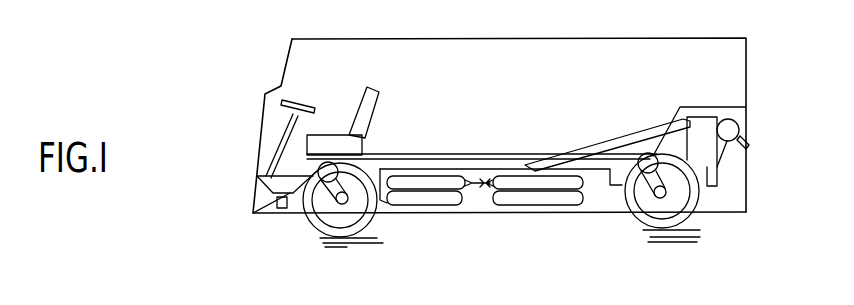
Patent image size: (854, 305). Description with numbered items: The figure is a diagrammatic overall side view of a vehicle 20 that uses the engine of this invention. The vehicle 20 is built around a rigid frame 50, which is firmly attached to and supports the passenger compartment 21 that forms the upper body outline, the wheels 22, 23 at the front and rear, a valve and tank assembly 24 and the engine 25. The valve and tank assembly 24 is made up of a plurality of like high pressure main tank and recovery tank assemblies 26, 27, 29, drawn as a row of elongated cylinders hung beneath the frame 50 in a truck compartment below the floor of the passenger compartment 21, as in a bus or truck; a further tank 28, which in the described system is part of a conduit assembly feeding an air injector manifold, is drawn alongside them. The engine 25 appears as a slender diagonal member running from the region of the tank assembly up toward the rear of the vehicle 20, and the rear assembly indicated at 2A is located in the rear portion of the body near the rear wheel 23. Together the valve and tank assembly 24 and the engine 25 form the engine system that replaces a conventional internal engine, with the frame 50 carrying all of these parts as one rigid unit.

The vehicle 20 is at (284, 66).
The passenger compartment 21 is at (494, 54).
The engine assembly 2A is at (711, 104).
The wheel 22 is at (318, 233).
The wheel 23 is at (648, 220).
The valve and tank assembly 24 is at (537, 114).
The engine 25 is at (703, 128).
The high pressure main tank and recovery tank assembly 26 is at (407, 187).
The high pressure main tank and recovery tank assembly 27 is at (527, 185).
The tank 28 is at (423, 200).
The high pressure main tank and recovery tank assembly 29 is at (537, 195).
The rigid frame 50 is at (420, 155).